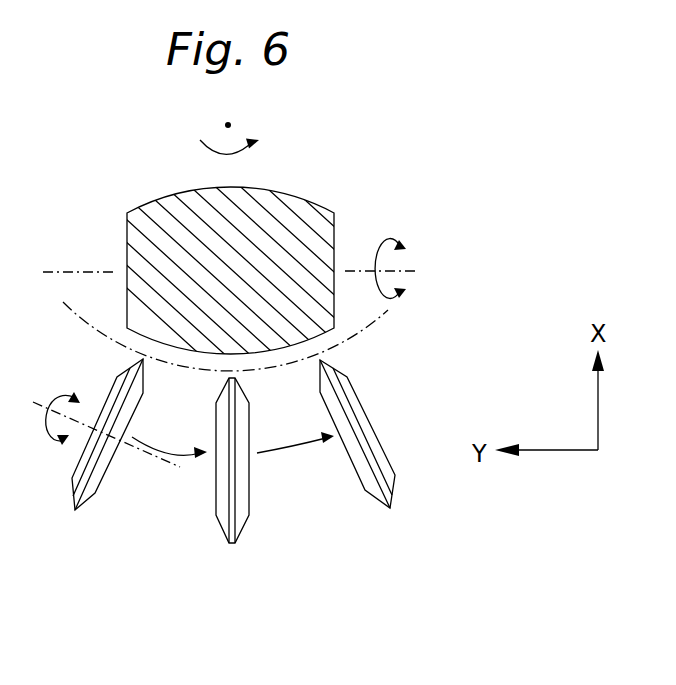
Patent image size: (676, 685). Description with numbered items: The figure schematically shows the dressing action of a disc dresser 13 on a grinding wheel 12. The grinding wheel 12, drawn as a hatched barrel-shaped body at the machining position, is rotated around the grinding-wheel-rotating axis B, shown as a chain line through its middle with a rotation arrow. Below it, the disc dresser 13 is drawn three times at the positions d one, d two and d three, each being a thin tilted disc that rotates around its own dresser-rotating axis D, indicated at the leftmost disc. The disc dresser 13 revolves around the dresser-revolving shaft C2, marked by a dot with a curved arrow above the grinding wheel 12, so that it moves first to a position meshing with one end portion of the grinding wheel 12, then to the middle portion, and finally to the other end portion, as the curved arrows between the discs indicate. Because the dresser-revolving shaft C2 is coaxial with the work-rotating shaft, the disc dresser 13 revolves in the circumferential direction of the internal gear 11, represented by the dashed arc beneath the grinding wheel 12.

The internal gear 11 is at (62, 303).
The grinding wheel 12 is at (163, 200).
The disc dresser 13 is at (72, 512).
The dresser-revolving shaft C2 is at (228, 125).
The grinding-wheel-rotating axis B is at (409, 269).
The dresser-rotating axis D is at (97, 426).